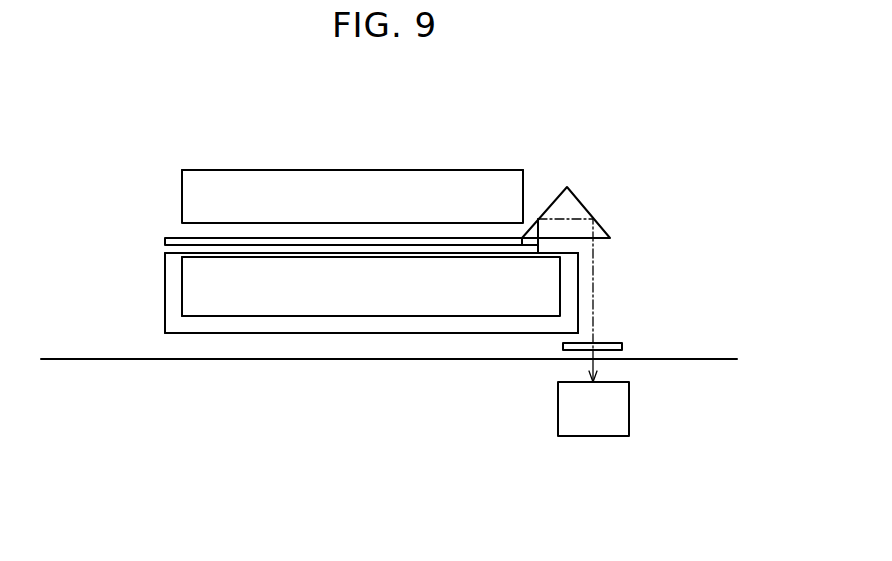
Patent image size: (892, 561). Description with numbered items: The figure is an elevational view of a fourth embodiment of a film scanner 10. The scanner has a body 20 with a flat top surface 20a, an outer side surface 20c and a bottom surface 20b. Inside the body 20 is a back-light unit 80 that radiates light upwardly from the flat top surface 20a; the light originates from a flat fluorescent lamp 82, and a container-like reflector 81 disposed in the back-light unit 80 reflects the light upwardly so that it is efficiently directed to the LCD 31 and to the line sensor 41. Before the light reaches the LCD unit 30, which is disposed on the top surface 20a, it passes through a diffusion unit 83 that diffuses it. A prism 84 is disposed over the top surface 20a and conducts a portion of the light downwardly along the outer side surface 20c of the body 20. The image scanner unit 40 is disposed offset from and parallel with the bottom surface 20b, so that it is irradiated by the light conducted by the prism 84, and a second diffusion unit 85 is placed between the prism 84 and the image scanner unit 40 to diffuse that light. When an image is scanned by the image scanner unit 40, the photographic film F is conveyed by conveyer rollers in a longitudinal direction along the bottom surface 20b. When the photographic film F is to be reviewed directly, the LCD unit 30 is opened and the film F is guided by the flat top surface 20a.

The film scanner 10 is at (677, 172).
The body 20 is at (191, 337).
The flat top surface 20a is at (484, 253).
The bottom surface 20b is at (368, 333).
The outer side surface 20c is at (578, 263).
The LCD unit 30 is at (182, 195).
The LCD 31 is at (367, 170).
The image scanner unit 40 is at (629, 408).
The line sensor 41 is at (572, 382).
The back-light unit 80 is at (163, 277).
The container-like reflector 81 is at (173, 307).
The flat fluorescent lamp 82 is at (250, 295).
The diffusion unit 83 is at (165, 241).
The prism 84 is at (578, 200).
The diffusion unit 85 is at (607, 342).
The photographic film F is at (700, 359).